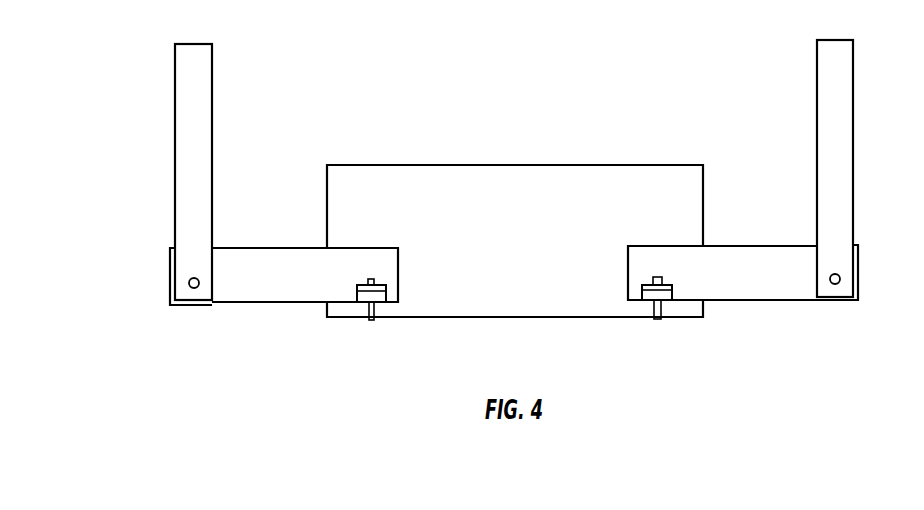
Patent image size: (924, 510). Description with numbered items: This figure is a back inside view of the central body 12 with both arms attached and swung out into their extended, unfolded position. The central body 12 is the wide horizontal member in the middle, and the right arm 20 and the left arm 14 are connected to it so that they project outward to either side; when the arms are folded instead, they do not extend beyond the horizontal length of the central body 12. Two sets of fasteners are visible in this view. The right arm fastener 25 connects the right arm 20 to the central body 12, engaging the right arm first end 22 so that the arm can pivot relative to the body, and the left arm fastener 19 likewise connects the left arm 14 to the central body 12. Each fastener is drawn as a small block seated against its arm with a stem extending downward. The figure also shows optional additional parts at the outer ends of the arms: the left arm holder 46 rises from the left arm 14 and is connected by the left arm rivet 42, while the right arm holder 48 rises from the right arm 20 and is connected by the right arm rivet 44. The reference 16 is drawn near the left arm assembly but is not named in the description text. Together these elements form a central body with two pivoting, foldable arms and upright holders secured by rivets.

The central body 12 is at (685, 165).
The left arm 14 is at (283, 303).
The left rail assembly 16 is at (308, 343).
The left arm fastener 19 is at (372, 321).
The right arm 20 is at (743, 302).
The right arm first end 22 is at (723, 340).
The right arm fastener 25 is at (657, 320).
The left arm rivet 42 is at (189, 280).
The right arm rivet 44 is at (841, 276).
The left arm holder 46 is at (175, 72).
The right arm holder 48 is at (853, 65).